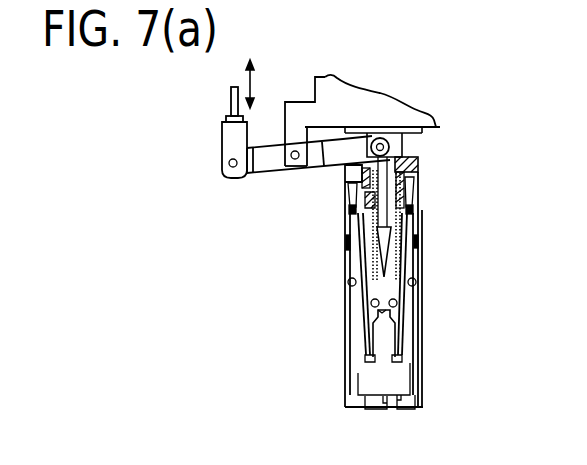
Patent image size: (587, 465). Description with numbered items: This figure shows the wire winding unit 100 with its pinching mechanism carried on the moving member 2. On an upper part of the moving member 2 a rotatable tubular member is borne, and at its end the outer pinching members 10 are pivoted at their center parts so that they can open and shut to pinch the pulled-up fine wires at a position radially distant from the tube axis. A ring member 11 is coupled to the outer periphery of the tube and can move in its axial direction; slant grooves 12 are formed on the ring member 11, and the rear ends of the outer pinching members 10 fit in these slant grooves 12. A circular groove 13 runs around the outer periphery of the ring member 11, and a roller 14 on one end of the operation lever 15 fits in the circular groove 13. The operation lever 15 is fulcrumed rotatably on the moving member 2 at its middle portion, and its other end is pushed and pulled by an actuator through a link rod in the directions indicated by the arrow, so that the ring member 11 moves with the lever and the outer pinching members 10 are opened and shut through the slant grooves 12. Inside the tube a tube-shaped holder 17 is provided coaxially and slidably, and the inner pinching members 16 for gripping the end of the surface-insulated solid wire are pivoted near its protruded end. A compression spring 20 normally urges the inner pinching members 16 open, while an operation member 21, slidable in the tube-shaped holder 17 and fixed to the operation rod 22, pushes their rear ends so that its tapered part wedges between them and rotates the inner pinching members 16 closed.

The moving member 2 is at (306, 97).
The outer pinching members 10 is at (410, 408).
The ring member 11 is at (418, 166).
The slant grooves 12 is at (352, 197).
The circular groove 13 is at (405, 142).
The roller 14 is at (373, 158).
The operation lever 15 is at (268, 167).
The inner pinching members 16 is at (398, 360).
The tube-shaped holder 17 is at (360, 223).
The compression spring 20 is at (388, 322).
The operation member 21 is at (408, 247).
The operation rod 22 is at (402, 222).
The wire winding unit 100 is at (424, 338).